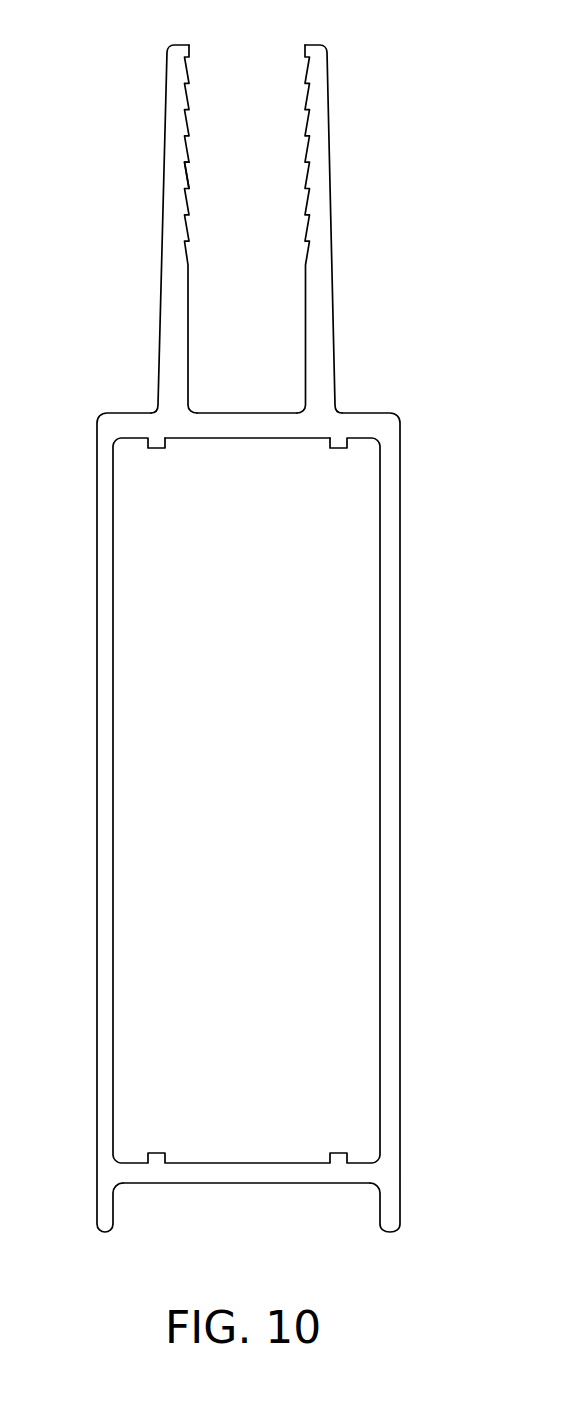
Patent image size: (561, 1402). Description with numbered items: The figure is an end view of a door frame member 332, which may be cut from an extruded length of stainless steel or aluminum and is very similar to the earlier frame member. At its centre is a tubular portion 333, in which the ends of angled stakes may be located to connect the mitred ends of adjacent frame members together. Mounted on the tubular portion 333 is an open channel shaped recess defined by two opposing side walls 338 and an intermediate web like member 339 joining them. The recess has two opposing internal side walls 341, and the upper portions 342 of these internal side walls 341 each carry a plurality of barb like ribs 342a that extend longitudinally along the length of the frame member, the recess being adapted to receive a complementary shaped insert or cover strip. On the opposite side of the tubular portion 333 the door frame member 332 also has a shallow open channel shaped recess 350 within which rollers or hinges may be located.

The door frame member 332 is at (432, 685).
The tubular portion 333 is at (352, 985).
The opposing side walls 338 is at (162, 213).
The intermediate web like member 339 is at (273, 428).
The internal side walls 341 is at (185, 175).
The upper portions of the side walls 342 is at (185, 100).
The barb like ribs 342a is at (310, 123).
The shallow open channel shaped recess 350 is at (300, 1210).